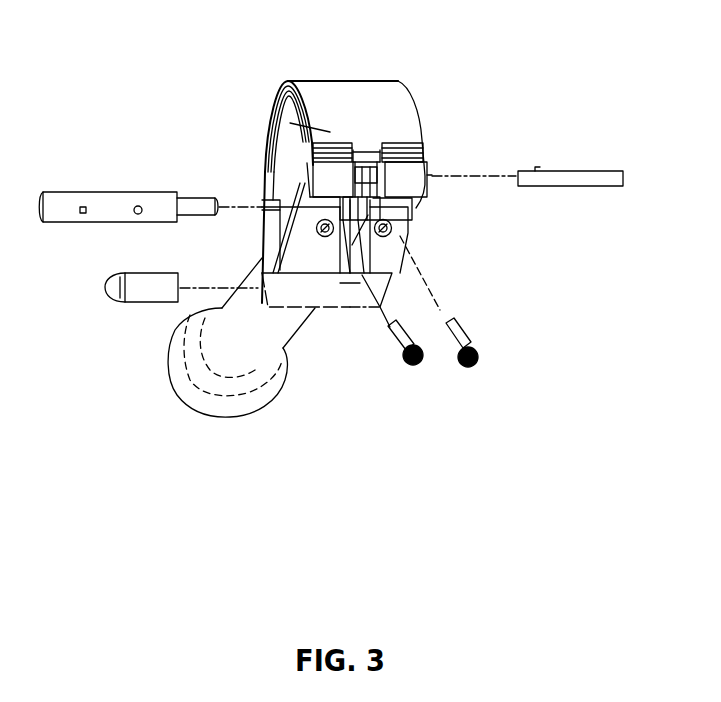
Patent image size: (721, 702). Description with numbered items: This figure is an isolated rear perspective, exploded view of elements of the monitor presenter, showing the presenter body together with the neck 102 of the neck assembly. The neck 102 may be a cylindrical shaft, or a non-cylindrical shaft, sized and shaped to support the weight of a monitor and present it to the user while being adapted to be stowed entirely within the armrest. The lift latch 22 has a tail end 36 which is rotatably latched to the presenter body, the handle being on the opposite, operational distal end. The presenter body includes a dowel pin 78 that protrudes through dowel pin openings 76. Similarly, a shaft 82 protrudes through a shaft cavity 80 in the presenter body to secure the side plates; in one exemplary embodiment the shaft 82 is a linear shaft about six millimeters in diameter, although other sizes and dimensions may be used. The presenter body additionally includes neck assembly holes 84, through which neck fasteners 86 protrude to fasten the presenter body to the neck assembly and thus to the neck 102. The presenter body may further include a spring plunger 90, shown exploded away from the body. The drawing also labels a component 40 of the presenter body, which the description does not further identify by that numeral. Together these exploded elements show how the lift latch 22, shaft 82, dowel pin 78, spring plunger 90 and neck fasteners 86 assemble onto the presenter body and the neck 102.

The lift latch 22 is at (350, 79).
The tail end 36 is at (272, 103).
The dowel pin openings 76 is at (432, 163).
The shaft cavity 80 is at (262, 200).
The shaft 82 is at (165, 190).
The clamp block 40 is at (405, 190).
The neck assembly holes 84 is at (400, 236).
The dowel pin 78 is at (604, 187).
The neck fasteners 86 is at (473, 360).
The spring plunger 90 is at (125, 298).
The neck 102 is at (253, 322).